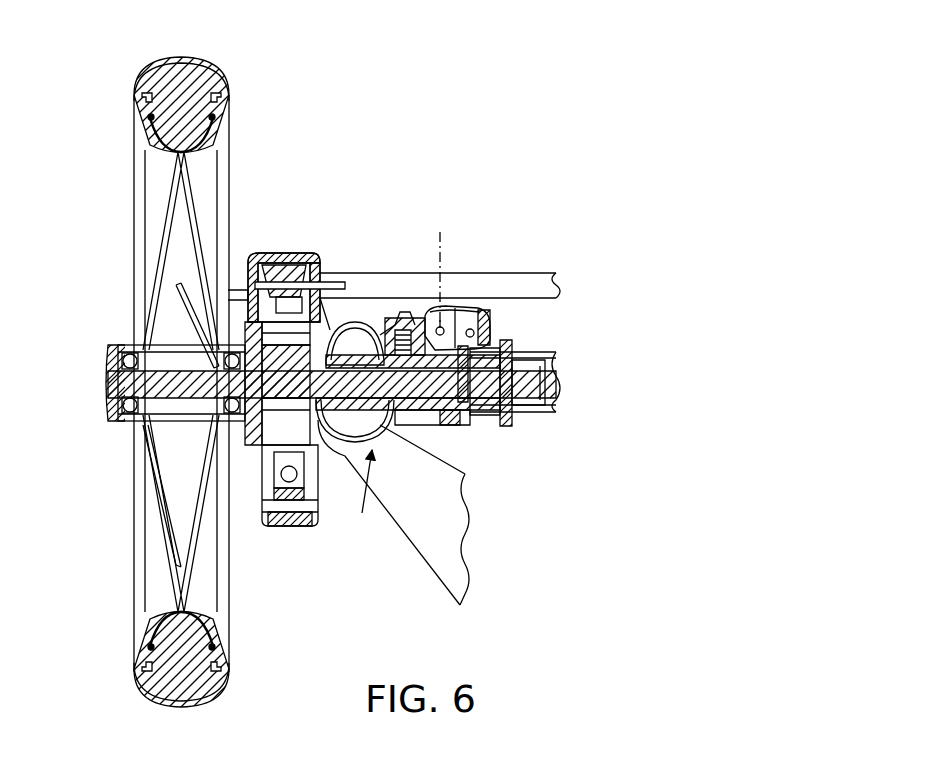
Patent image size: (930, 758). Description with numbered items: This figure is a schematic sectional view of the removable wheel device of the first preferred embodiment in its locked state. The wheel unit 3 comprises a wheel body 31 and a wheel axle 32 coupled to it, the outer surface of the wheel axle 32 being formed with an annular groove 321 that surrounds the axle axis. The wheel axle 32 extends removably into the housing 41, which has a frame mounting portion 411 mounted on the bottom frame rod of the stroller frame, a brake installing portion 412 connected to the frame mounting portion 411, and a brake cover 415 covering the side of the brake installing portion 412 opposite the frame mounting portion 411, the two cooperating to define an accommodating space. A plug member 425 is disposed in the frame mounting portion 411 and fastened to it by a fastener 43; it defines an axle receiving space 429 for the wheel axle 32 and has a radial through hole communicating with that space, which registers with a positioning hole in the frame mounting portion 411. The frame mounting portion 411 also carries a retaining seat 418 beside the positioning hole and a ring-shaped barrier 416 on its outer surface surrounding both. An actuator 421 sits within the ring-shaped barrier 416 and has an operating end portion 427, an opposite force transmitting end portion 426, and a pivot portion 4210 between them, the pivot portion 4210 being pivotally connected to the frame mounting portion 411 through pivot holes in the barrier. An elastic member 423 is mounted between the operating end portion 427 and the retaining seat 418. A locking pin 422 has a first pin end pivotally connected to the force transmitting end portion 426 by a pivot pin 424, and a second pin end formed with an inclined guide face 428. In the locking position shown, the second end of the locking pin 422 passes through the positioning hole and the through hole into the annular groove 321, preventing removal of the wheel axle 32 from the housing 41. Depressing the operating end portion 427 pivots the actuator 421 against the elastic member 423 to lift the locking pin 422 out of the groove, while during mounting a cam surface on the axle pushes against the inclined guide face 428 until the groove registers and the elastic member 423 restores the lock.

The wheel unit 3 is at (116, 64).
The wheel body 31 is at (180, 57).
The wheel axle 32 is at (272, 396).
The annular groove 321 is at (488, 415).
The housing 41 is at (380, 432).
The frame mounting portion 411 is at (436, 478).
The brake installing portion 412 is at (300, 513).
The brake cover 415 is at (287, 487).
The ring-shaped barrier 416 is at (487, 322).
The retaining seat 418 is at (382, 340).
The actuator 421 is at (452, 298).
The pivot portion 4210 is at (444, 269).
The locking pin 422 is at (500, 378).
The elastic member 423 is at (412, 318).
The pivot pin 424 is at (476, 330).
The plug member 425 is at (403, 412).
The force transmitting end portion 426 is at (471, 312).
The operating end portion 427 is at (395, 328).
The inclined guide face 428 is at (425, 408).
The axle receiving space 429 is at (344, 425).
The fastener 43 is at (508, 424).